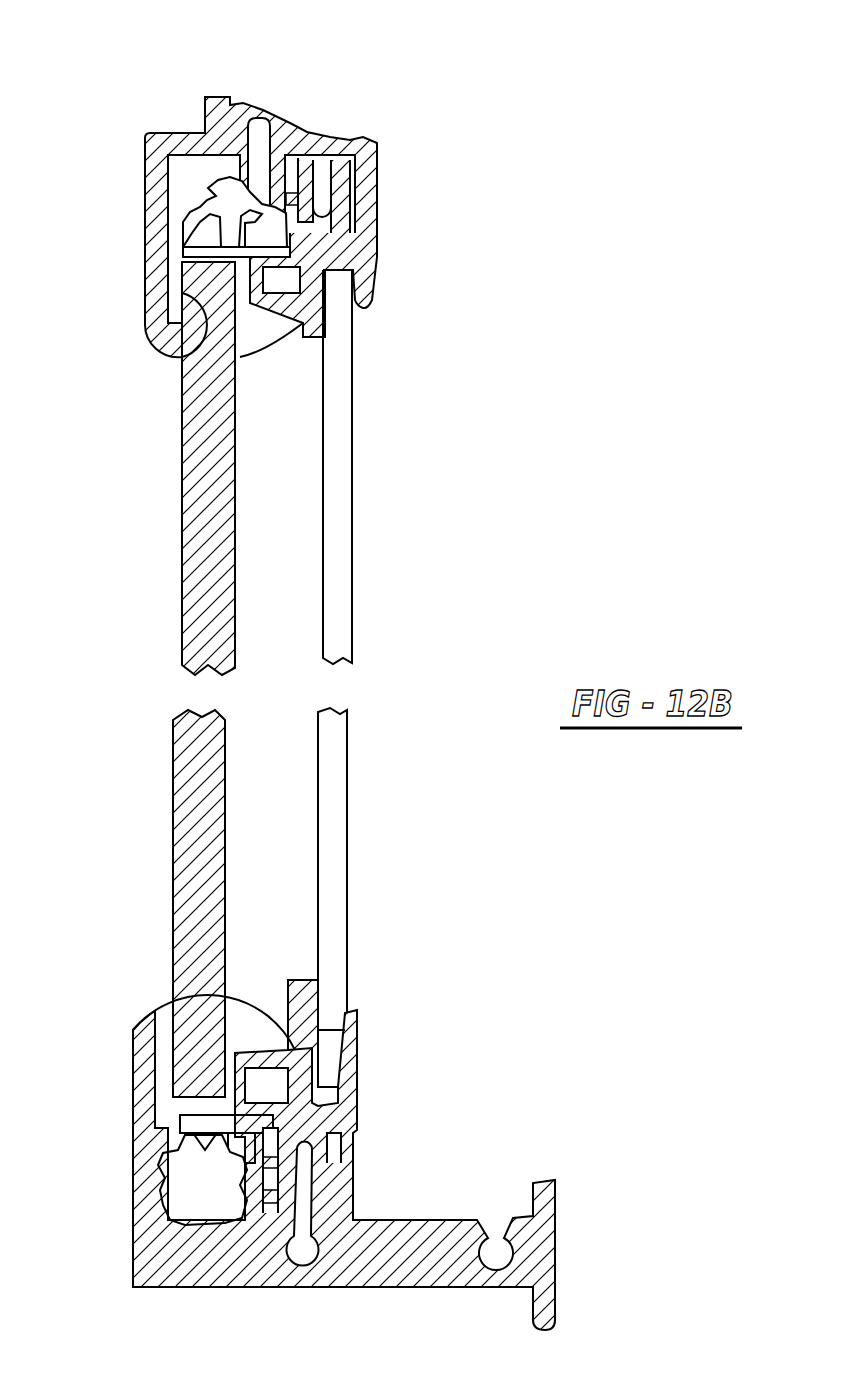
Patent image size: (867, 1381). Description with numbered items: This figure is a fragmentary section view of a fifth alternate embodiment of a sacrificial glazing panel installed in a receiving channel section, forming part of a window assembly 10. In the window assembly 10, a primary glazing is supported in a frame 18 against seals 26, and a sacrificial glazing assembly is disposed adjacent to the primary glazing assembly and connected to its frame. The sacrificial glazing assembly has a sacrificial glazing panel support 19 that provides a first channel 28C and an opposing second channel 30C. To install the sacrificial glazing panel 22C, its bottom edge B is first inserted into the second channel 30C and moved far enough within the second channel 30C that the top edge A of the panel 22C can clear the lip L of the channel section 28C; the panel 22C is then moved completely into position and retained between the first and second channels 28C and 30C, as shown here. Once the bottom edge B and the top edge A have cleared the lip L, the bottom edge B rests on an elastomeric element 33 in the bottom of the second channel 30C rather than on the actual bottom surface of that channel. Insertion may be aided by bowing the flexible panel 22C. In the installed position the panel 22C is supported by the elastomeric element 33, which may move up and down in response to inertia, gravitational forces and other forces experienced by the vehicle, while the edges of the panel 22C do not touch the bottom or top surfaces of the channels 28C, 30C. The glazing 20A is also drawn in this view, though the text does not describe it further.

The window assembly 10 is at (293, 761).
The frame 18 is at (353, 120).
The sacrificial glazing panel support 19 is at (392, 270).
The first panel 20A is at (195, 523).
The sacrificial glazing panel 22C is at (344, 550).
The seals 26 is at (176, 358).
The first channel 28C is at (353, 328).
The second channel 30C is at (320, 1080).
The elastomeric element 33 is at (327, 1057).
The top edge A is at (332, 271).
The bottom edge B is at (323, 1030).
The lip L is at (377, 293).